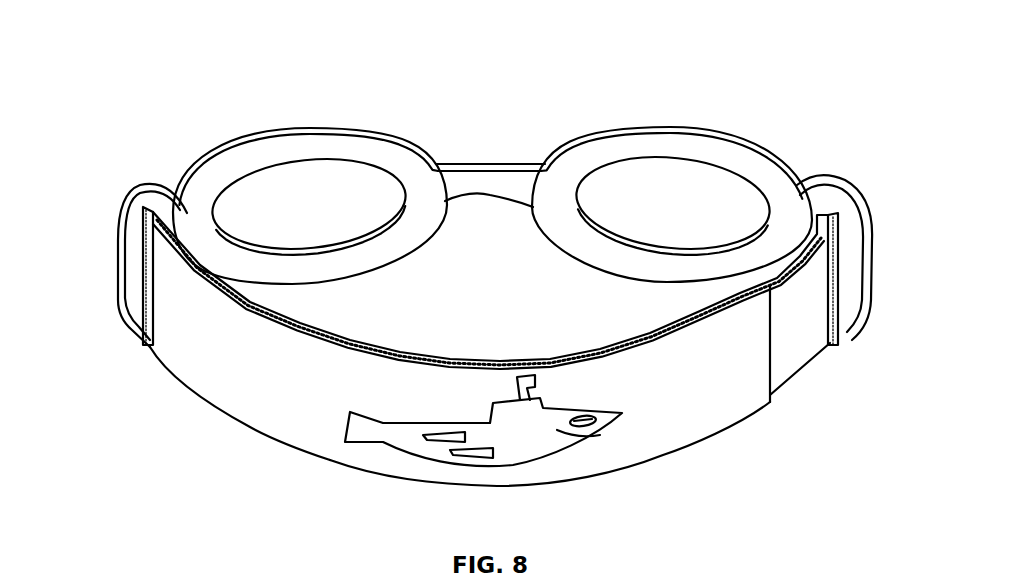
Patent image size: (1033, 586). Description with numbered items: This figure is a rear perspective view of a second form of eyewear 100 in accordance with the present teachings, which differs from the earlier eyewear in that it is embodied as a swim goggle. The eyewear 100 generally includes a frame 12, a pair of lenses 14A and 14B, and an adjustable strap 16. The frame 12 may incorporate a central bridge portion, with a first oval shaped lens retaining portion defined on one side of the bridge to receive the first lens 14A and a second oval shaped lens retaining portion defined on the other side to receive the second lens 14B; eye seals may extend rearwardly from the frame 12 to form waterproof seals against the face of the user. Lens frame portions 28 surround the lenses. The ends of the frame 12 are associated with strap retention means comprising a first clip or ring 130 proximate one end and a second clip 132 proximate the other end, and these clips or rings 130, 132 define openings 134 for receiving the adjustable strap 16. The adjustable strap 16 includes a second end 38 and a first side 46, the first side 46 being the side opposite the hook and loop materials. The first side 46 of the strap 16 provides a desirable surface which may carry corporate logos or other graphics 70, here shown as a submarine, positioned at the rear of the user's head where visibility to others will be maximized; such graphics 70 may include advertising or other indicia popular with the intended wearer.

The eyewear 100 is at (148, 42).
The frame 12 is at (487, 173).
The first lens 14A is at (663, 181).
The second lens 14B is at (322, 184).
The adjustable strap 16 is at (672, 432).
The lens frame 28 is at (390, 247).
The second end 38 is at (772, 372).
The first side 46 is at (300, 415).
The corporate logos or other graphics 70 is at (545, 448).
The first clip or ring 130 is at (832, 214).
The second clip 132 is at (158, 197).
The openings 134 is at (147, 228).